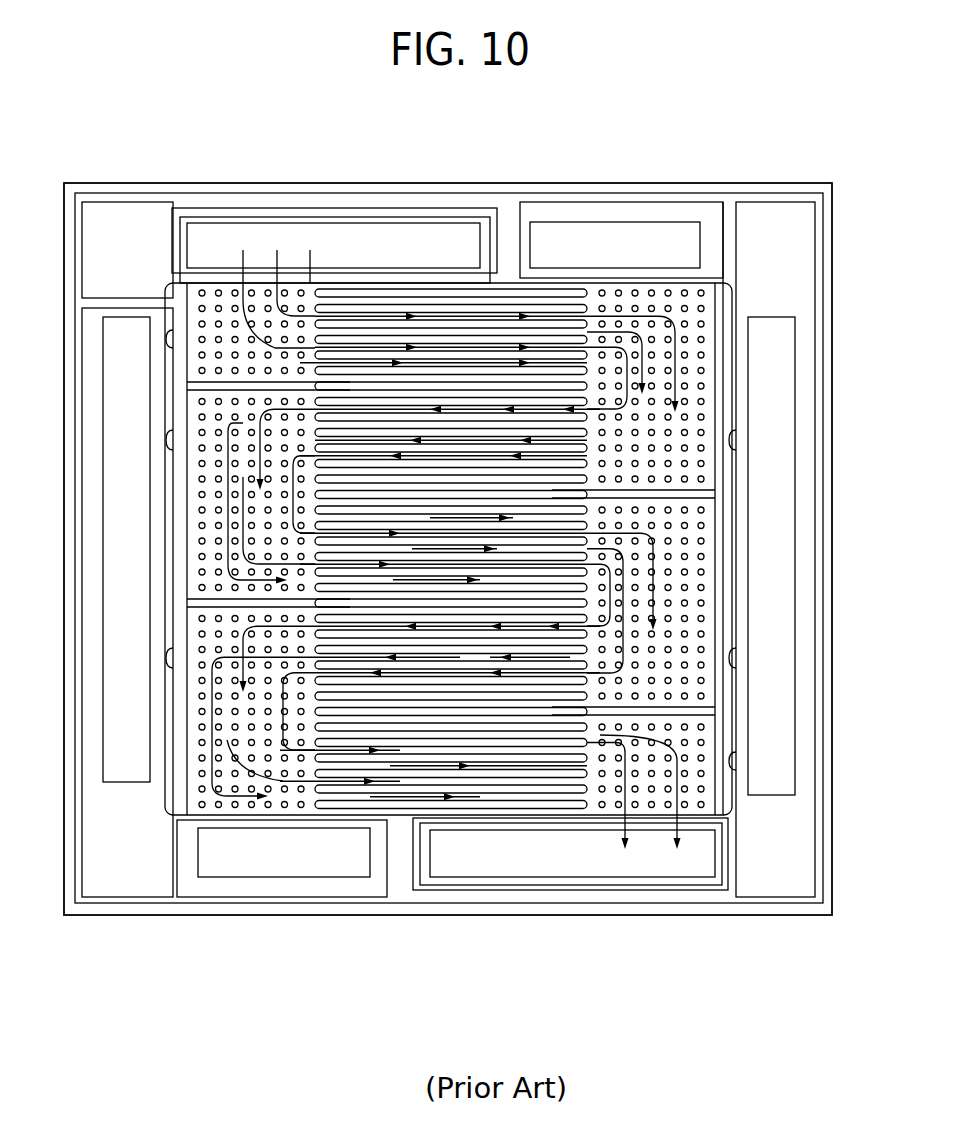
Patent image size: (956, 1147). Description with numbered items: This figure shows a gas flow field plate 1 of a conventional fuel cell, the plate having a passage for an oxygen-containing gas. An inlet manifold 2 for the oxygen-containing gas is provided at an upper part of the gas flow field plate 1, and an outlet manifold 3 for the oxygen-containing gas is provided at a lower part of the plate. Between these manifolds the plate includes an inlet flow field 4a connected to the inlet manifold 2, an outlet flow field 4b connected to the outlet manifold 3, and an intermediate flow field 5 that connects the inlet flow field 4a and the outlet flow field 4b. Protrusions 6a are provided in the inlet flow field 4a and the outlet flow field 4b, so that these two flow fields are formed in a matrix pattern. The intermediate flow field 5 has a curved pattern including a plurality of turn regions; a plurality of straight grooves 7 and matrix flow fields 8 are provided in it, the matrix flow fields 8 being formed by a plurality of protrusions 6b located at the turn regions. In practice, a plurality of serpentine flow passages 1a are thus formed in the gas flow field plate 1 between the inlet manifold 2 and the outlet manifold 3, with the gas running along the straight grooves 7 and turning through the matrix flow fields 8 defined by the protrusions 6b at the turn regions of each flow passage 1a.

The gas flow field plate 1 is at (688, 155).
The serpentine flow passages 1a is at (680, 368).
The inlet manifold 2 is at (345, 237).
The outlet manifold 3 is at (558, 858).
The inlet flow field 4a is at (164, 335).
The outlet flow field 4b is at (740, 760).
The intermediate flow field 5 is at (478, 793).
The protrusions 6a is at (233, 288).
The protrusions 6b is at (200, 524).
The straight grooves 7 is at (425, 316).
The matrix flow fields 8 is at (162, 440).